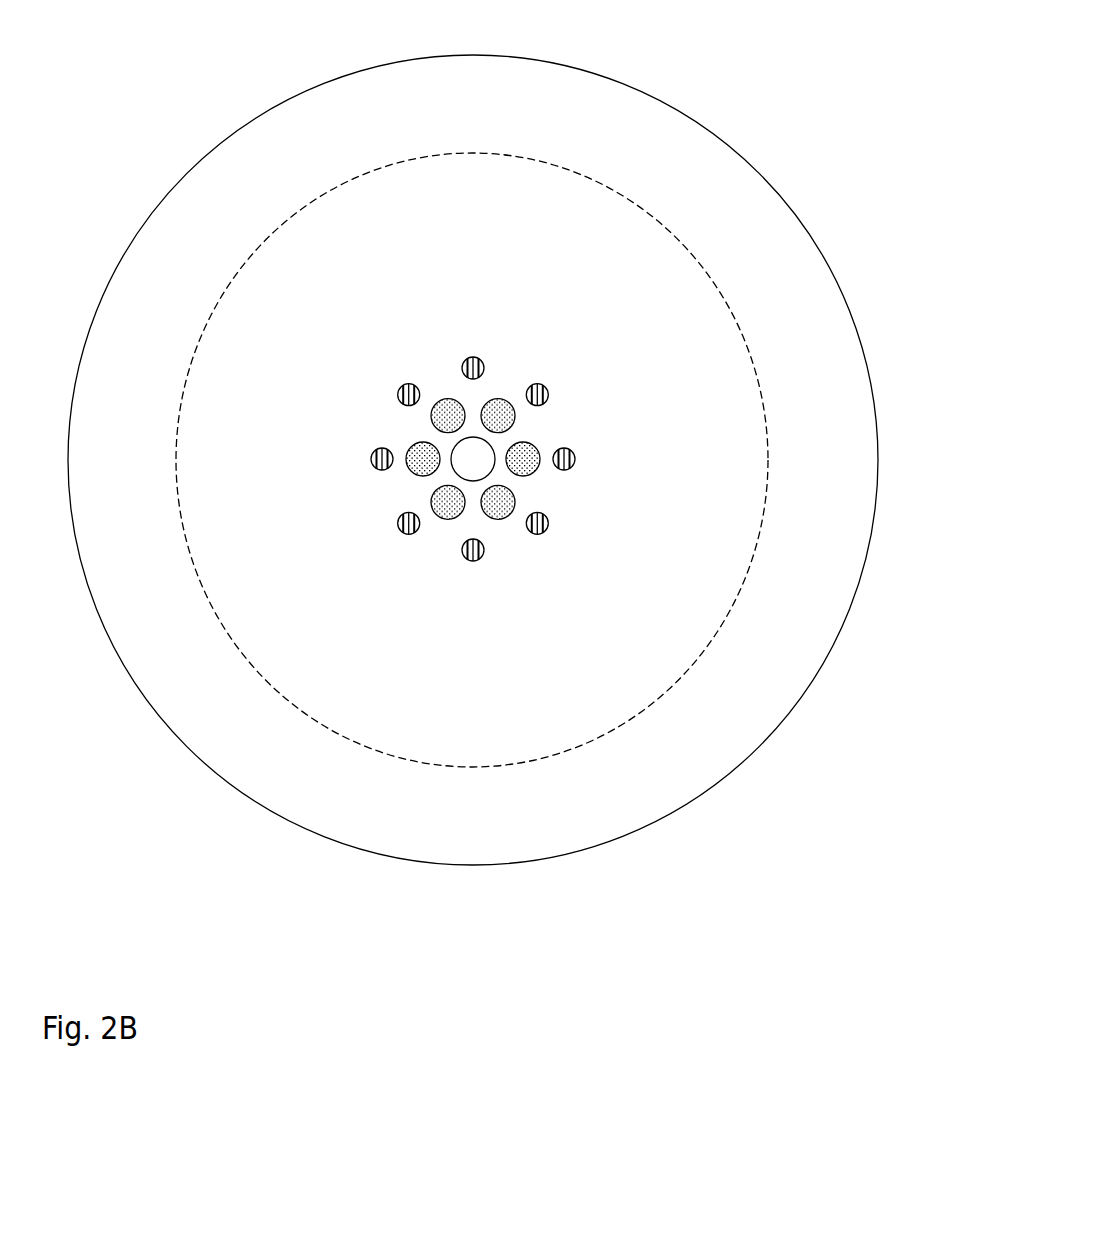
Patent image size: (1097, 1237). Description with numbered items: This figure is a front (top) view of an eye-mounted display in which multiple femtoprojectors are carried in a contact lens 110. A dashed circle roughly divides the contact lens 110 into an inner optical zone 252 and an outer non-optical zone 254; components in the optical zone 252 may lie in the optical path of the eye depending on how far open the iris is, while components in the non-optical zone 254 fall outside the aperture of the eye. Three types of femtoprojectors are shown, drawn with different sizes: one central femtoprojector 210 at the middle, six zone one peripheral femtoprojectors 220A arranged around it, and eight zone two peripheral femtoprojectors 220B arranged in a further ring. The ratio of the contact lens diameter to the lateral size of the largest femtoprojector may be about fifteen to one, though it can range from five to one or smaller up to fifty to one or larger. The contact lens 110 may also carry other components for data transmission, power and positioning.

The contact lens 110 is at (595, 73).
The non-optical zone 254 is at (520, 130).
The optical zone 252 is at (545, 212).
The central femtoprojector 210 is at (455, 444).
The zone 1 peripheral femtoprojectors 220A is at (535, 447).
The zone 2 peripheral femtoprojectors 220B is at (477, 358).